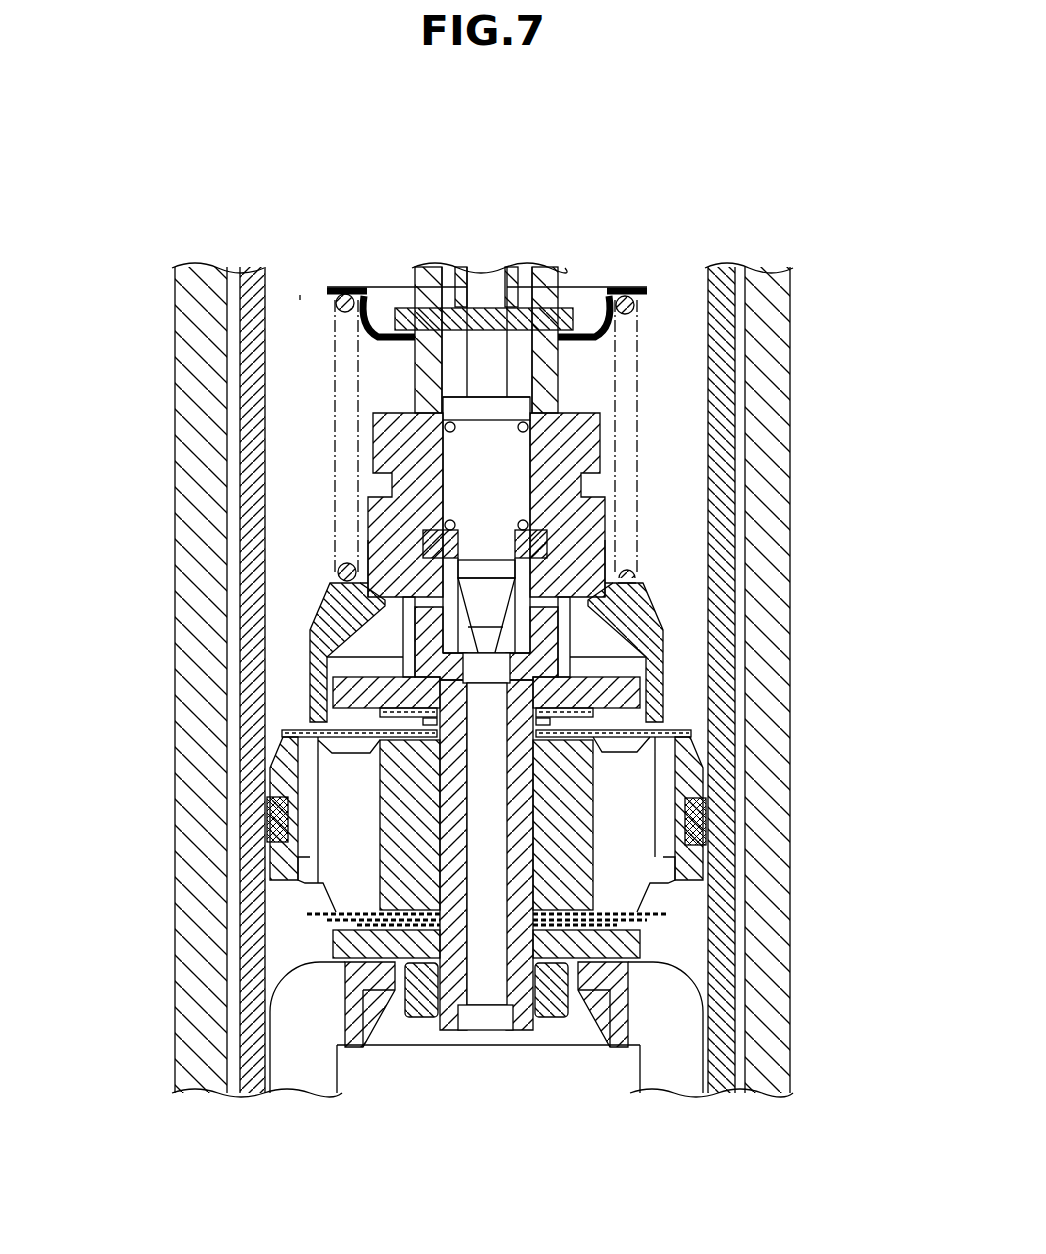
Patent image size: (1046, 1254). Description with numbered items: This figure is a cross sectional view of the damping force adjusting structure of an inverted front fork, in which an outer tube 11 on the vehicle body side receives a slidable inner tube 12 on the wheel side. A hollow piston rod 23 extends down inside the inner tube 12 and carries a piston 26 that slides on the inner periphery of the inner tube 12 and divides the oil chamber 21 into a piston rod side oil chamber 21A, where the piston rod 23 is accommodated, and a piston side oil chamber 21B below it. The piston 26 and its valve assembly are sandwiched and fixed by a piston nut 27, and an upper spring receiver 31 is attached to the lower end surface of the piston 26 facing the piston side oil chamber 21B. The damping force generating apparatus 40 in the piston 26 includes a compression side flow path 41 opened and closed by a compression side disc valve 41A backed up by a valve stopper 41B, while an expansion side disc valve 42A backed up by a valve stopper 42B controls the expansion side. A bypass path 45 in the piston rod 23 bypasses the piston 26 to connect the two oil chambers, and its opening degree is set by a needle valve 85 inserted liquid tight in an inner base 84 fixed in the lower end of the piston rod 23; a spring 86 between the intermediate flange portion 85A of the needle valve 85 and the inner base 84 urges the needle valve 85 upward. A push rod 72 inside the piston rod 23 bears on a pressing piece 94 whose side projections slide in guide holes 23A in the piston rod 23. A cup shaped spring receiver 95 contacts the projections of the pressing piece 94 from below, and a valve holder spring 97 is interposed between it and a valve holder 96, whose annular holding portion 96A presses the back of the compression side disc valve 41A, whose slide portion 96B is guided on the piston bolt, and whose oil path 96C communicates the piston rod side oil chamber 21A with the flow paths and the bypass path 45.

The outer tube 11 is at (185, 317).
The inner tube 12 is at (245, 357).
The oil chamber 21 is at (680, 440).
The piston rod side oil chamber 21A is at (298, 297).
The piston side oil chamber 21B is at (535, 1075).
The piston rod 23 is at (543, 282).
The guide hole 23A is at (552, 385).
The piston 26 is at (703, 778).
The piston nut 27 is at (413, 1018).
The upper spring receiver 31 is at (280, 980).
The damping force generating apparatus 40 is at (288, 902).
The compression side flow path 41 is at (333, 795).
The compression side disc valve 41A is at (300, 731).
The valve stopper 41B is at (360, 692).
The expansion side disc valve 42A is at (665, 915).
The valve stopper 42B is at (630, 945).
The bypass path 45 is at (480, 872).
The push rod 72 is at (515, 267).
The inner base 84 is at (425, 540).
The needle valve 85 is at (455, 608).
The intermediate flange portion 85A is at (455, 405).
The spring 86 is at (440, 455).
The pressing piece 94 is at (576, 300).
The spring receiver 95 is at (637, 293).
The valve holder 96 is at (662, 660).
The annular holding portion 96A is at (662, 690).
The slide portion 96B is at (603, 517).
The oil path 96C is at (640, 602).
The valve holder spring 97 is at (645, 302).